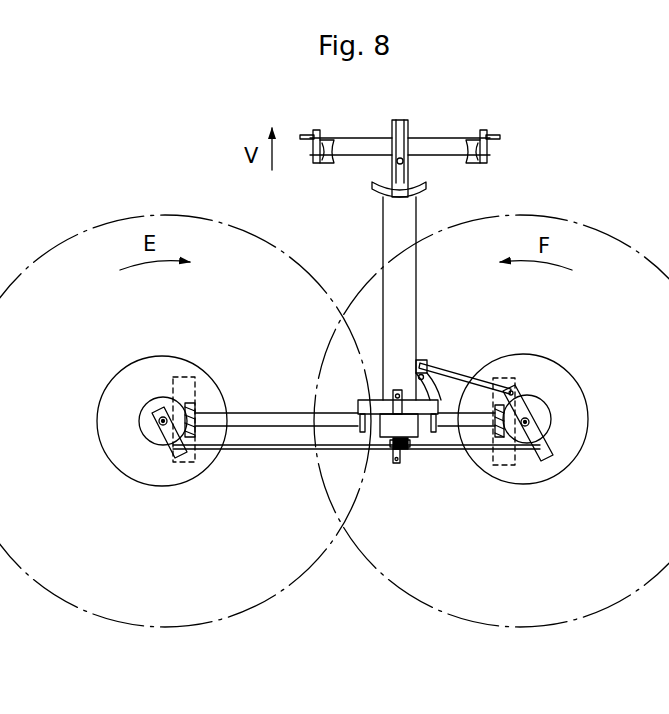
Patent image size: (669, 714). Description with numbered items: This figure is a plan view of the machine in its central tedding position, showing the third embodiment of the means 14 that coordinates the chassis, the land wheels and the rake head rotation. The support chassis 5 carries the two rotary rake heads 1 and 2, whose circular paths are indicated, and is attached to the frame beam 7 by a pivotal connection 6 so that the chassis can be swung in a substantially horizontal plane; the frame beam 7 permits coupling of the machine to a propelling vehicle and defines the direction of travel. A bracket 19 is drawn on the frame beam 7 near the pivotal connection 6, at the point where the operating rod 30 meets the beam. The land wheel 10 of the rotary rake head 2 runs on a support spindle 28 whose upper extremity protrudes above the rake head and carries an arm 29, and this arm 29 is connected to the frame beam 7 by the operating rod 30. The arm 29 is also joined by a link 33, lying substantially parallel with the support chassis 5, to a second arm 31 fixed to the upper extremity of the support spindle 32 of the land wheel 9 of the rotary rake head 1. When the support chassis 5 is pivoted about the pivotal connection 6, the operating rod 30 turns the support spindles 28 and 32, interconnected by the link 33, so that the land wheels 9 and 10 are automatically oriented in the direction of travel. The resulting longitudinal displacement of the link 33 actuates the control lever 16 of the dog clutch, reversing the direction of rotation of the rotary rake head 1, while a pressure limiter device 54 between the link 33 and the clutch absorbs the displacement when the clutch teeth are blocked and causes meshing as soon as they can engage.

The rotary rake head 1 is at (52, 600).
The rotary rake head 2 is at (629, 610).
The support chassis 5 is at (255, 413).
The pivotal connection 6 is at (378, 400).
The frame beam 7 is at (383, 262).
The land wheel 9 is at (183, 377).
The land wheel 10 is at (504, 378).
The means 14 is at (390, 462).
The control lever 16 is at (407, 449).
The bracket 19 is at (434, 356).
The support spindle 28 is at (531, 422).
The arm 29 is at (552, 392).
The operating rod 30 is at (460, 372).
The second arm 31 is at (172, 448).
The support spindle 32 is at (158, 422).
The link 33 is at (259, 450).
The pressure limiter device 54 is at (401, 452).